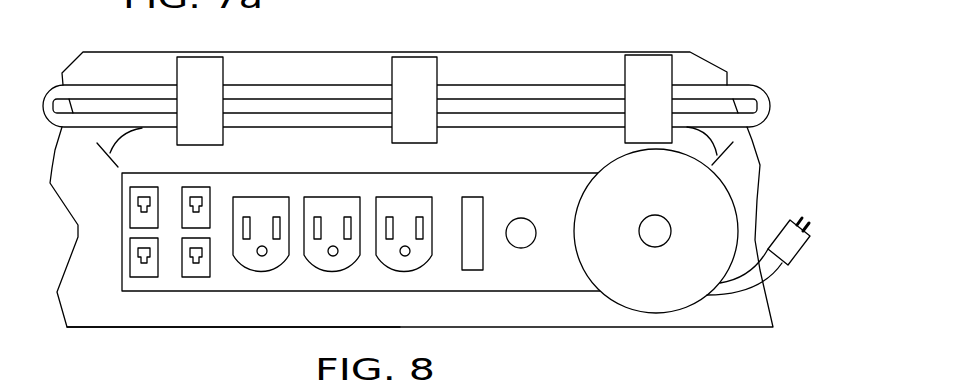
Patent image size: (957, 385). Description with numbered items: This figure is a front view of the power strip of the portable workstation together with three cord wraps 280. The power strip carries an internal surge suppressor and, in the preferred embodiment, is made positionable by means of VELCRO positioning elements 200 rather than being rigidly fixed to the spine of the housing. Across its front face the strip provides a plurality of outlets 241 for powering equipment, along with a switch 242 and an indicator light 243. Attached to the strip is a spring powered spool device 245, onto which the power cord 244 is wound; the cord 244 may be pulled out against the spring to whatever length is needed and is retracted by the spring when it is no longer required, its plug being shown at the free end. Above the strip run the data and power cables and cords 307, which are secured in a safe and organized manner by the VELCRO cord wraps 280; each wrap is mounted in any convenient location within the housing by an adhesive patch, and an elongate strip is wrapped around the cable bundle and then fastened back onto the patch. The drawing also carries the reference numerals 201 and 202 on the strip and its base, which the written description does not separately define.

The VELCRO positioning elements 200 is at (670, 384).
The front panel 201 is at (65, 380).
The base 202 is at (177, 370).
The outlets 241 is at (413, 273).
The switch 242 is at (470, 237).
The indicator light 243 is at (524, 237).
The power cord 244 is at (773, 268).
The spring powered spool device 245 is at (700, 207).
The cord wraps 280 is at (455, 67).
The cables and cords 307 is at (300, 92).